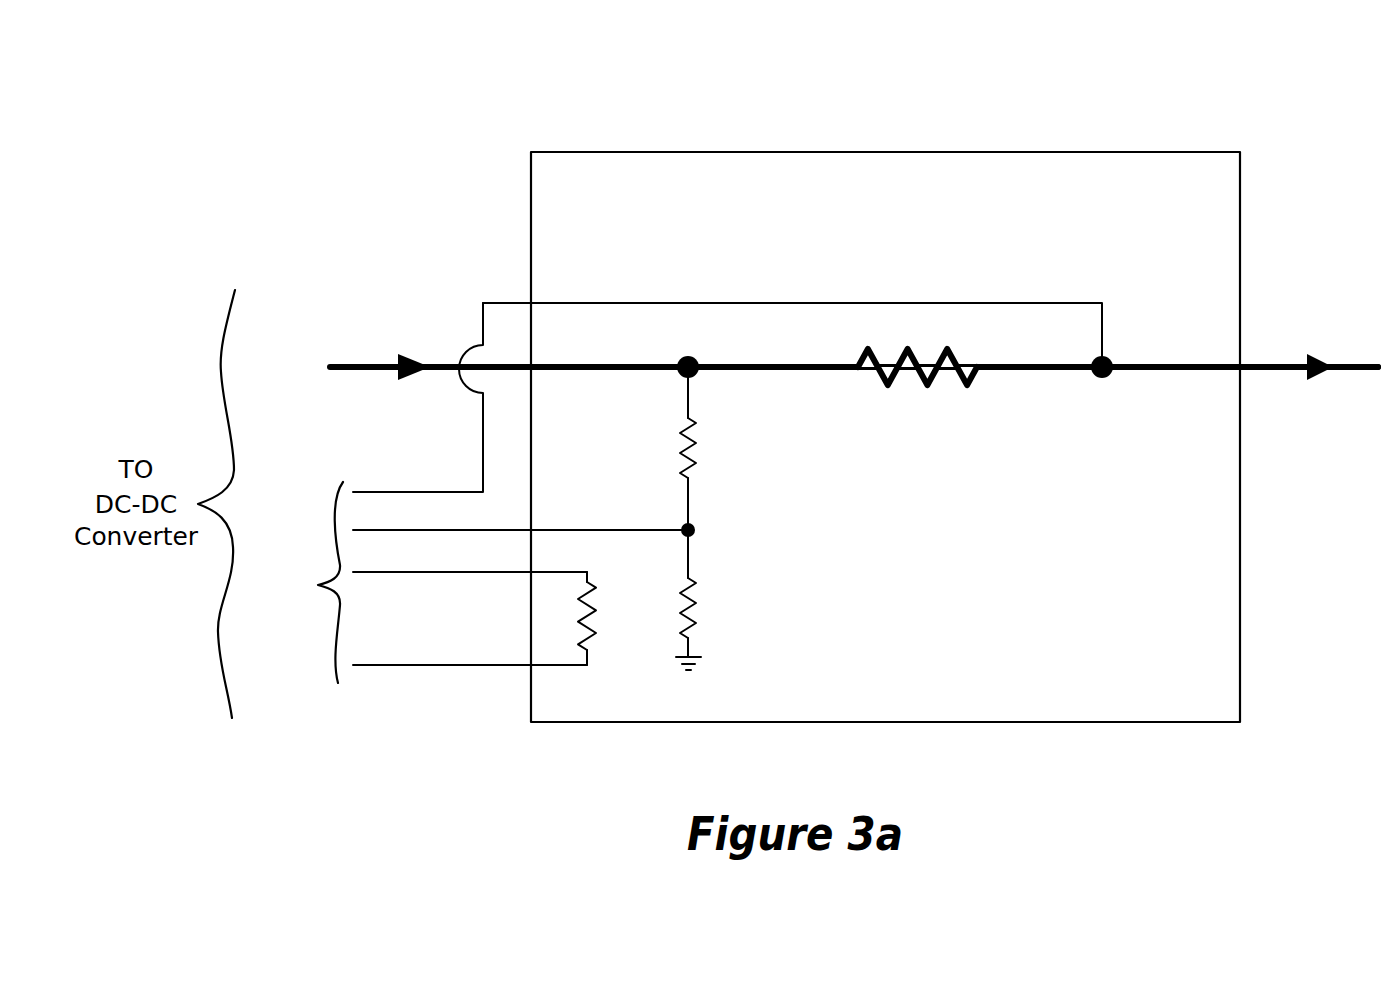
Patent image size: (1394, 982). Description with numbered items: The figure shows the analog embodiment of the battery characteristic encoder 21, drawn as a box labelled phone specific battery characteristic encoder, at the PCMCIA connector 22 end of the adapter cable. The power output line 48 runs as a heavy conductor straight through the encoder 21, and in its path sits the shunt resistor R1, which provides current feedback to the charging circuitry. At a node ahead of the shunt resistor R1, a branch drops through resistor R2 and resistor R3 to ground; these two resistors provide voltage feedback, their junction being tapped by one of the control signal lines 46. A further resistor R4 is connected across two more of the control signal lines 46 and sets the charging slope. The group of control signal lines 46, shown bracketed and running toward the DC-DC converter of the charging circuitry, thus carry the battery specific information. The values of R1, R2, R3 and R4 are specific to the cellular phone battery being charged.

The battery characteristic encoder 21 is at (997, 152).
The PCMCIA connector 22 is at (1391, 501).
The control signal lines 46 is at (306, 585).
The power output line 48 is at (1263, 362).
The shunt resistor R1 is at (917, 390).
The resistor R2 is at (711, 448).
The resistor R3 is at (709, 600).
The resistor R4 is at (609, 618).